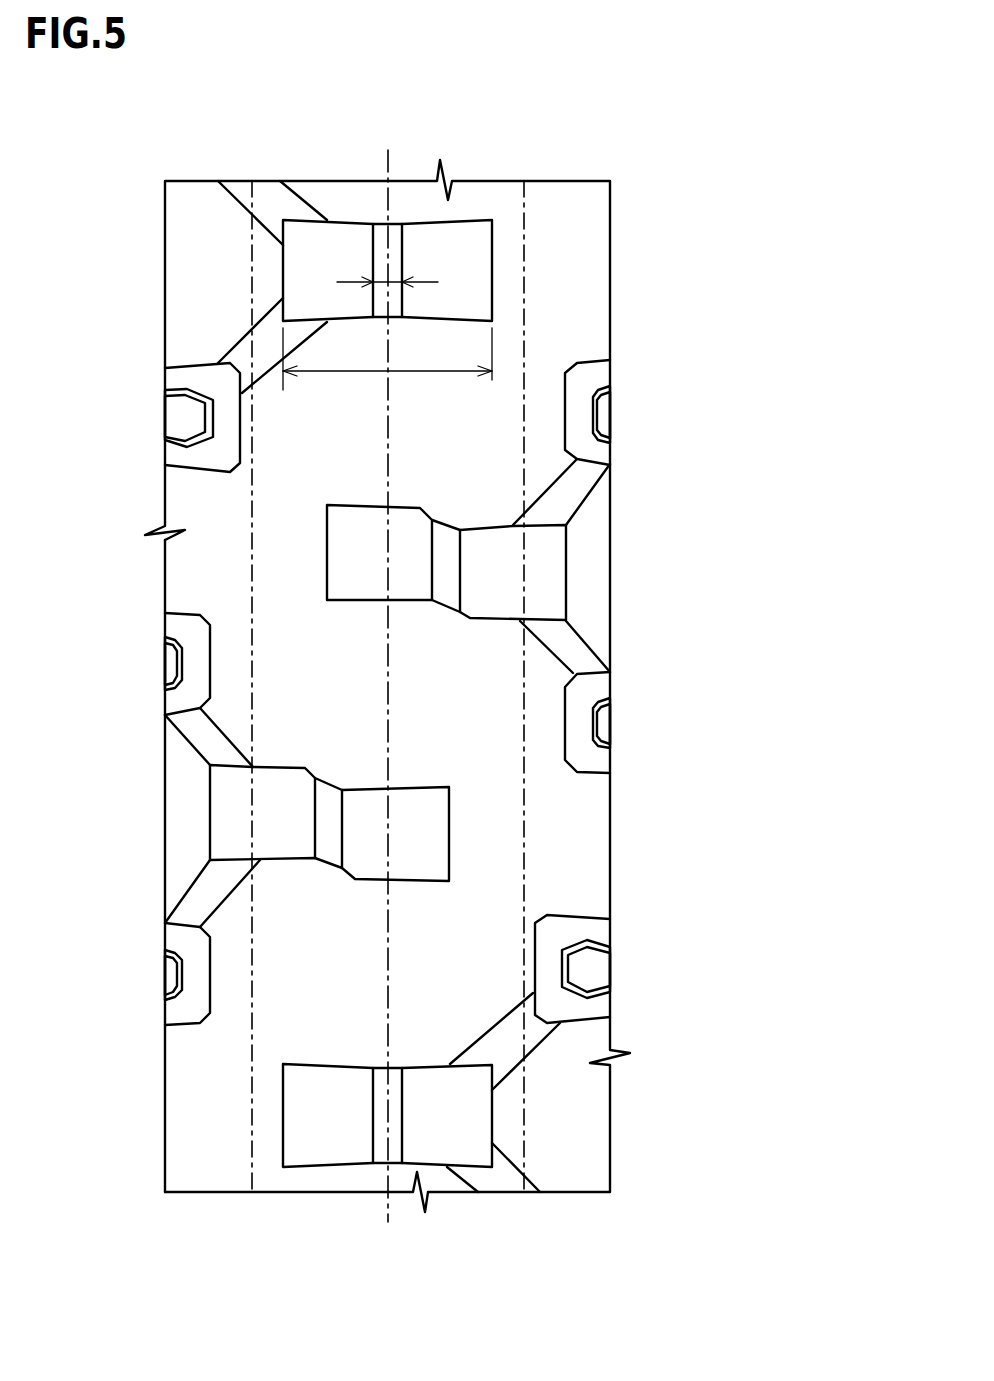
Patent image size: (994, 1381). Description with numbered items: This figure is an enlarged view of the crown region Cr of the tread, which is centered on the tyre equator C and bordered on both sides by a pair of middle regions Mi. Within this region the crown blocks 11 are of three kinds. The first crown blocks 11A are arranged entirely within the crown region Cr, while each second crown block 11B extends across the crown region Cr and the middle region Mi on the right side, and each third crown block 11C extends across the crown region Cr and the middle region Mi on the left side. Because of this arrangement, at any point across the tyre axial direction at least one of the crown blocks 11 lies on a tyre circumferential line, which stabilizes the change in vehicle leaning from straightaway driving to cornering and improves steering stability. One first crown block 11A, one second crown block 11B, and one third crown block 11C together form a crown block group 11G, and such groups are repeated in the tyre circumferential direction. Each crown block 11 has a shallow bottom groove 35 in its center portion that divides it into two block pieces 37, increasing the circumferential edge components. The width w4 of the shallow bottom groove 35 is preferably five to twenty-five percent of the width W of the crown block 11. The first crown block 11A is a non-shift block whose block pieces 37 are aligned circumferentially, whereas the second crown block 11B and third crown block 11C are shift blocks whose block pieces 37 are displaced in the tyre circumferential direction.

The crown block 11 is at (521, 270).
The first crown block 11A is at (452, 275).
The second crown block 11B is at (497, 570).
The third crown block 11C is at (489, 823).
The crown block group 11G is at (533, 550).
The shallow bottom groove 35 is at (328, 820).
The block piece 37 is at (232, 795).
The width of crown block W is at (346, 371).
The width of shallow bottom groove w4 is at (380, 281).
The tyre equator C is at (390, 671).
The crown region Cr is at (268, 1152).
The middle region Mi is at (208, 1152).